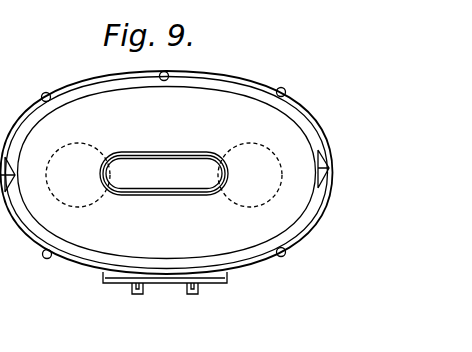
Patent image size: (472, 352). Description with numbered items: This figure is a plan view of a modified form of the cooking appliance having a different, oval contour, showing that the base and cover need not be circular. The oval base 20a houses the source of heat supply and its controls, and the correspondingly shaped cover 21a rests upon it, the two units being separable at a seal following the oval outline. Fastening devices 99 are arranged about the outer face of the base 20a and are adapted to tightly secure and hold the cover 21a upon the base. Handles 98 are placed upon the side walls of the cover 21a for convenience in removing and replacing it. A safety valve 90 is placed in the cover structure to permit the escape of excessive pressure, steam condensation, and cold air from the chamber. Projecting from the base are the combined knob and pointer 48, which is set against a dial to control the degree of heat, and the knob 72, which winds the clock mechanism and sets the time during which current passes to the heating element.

The fastening devices 99 is at (45, 93).
The safety valve 90 is at (167, 78).
The rim flange 21a is at (246, 92).
The handles 98 is at (320, 171).
The base ring 20a is at (313, 226).
The combined knob and pointer 48 is at (137, 295).
The knob 72 is at (196, 295).